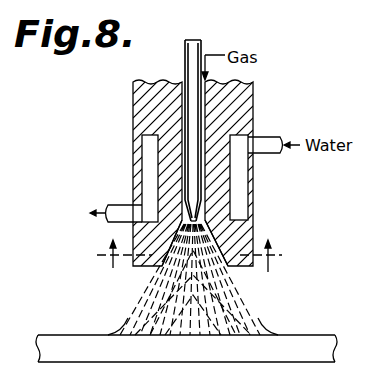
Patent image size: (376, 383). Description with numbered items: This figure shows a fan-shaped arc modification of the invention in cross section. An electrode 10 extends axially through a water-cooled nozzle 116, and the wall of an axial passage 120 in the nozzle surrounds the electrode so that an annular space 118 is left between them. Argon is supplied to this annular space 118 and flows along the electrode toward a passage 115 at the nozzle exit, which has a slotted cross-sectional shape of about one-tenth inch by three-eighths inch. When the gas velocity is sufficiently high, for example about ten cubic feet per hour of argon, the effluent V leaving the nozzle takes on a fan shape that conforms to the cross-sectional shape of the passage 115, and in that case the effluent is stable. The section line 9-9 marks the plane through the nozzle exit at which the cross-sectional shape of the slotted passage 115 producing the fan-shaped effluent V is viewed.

The electrode 10 is at (185, 57).
The annular space 118 is at (182, 105).
The water-cooled nozzle 116 is at (255, 95).
The axial passage 120 is at (194, 216).
The passage 115 is at (214, 245).
The section line 9- 9 is at (189, 266).
The fan-shaped effluent V is at (245, 310).